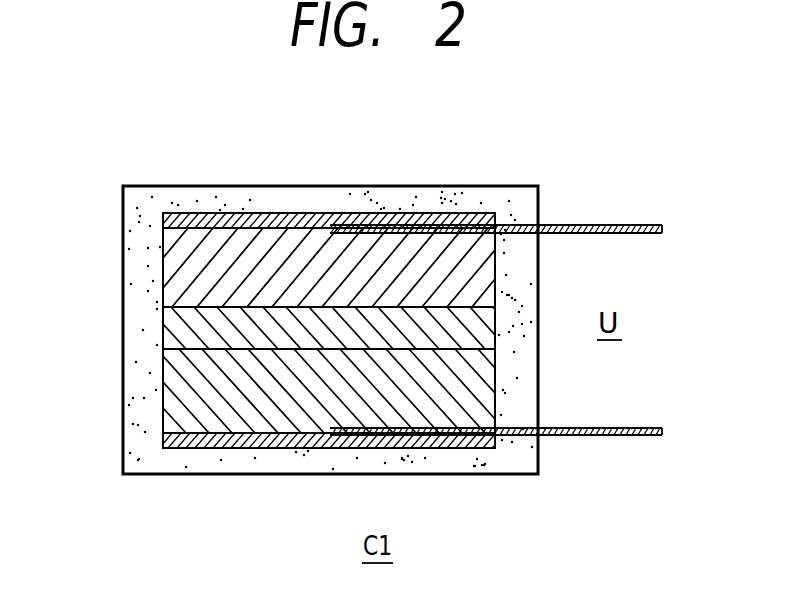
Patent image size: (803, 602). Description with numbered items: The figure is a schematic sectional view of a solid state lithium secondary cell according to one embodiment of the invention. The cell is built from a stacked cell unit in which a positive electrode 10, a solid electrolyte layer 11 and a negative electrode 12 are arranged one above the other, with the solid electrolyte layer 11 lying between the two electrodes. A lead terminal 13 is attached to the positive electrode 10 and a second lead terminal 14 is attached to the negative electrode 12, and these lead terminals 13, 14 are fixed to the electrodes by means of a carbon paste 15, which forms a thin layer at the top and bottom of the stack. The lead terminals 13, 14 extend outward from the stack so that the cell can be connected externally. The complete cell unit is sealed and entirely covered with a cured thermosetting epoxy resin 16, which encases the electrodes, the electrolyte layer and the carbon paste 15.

The positive electrode 10 is at (165, 260).
The solid electrolyte layer 11 is at (165, 330).
The negative electrode 12 is at (165, 380).
The lead terminal 13 is at (594, 225).
The lead terminal 14 is at (573, 437).
The carbon paste 15 is at (242, 213).
The cured epoxy resin 16 is at (155, 198).